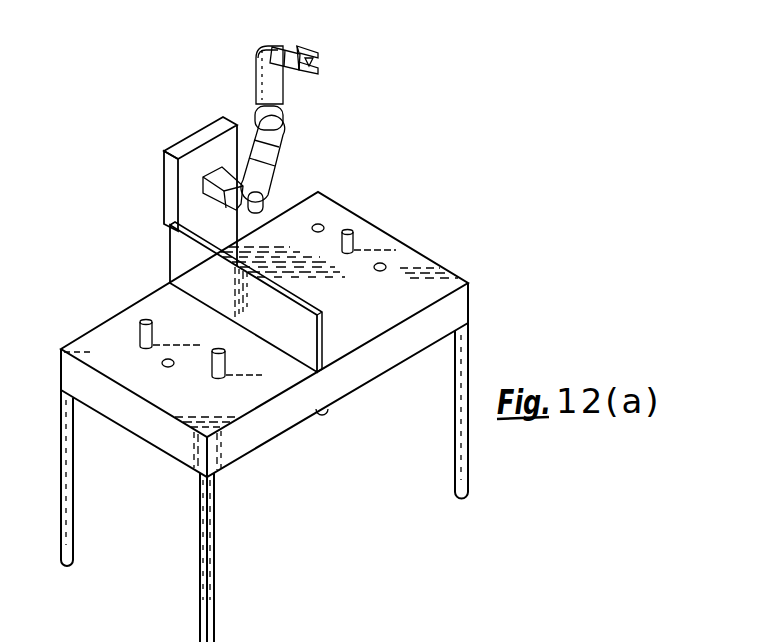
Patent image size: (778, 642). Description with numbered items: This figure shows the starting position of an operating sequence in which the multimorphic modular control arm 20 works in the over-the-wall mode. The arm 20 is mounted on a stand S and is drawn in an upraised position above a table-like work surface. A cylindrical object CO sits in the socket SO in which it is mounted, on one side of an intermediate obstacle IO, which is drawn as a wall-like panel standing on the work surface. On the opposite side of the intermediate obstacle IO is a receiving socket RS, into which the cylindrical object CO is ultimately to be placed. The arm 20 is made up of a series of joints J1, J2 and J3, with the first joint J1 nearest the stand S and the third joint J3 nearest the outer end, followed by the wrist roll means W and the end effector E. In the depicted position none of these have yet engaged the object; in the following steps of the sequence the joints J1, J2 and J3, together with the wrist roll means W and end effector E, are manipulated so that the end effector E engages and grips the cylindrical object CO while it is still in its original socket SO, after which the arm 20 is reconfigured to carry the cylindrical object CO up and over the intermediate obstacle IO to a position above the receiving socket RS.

The control arm 20 is at (162, 116).
The stand / support column S is at (166, 178).
The joint J1 is at (272, 191).
The joint J2 is at (286, 114).
The joint J3 is at (250, 42).
The wrist roll means W is at (297, 38).
The end effector E is at (324, 52).
The cylindrical object CO is at (348, 230).
The socket SO is at (355, 246).
The intermediate obstacle IO is at (322, 328).
The receiving socket RS is at (162, 363).